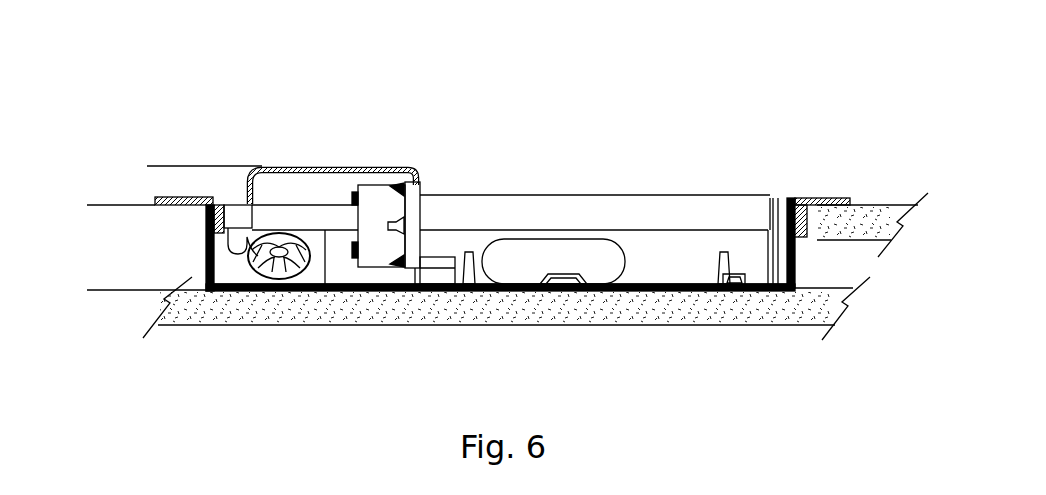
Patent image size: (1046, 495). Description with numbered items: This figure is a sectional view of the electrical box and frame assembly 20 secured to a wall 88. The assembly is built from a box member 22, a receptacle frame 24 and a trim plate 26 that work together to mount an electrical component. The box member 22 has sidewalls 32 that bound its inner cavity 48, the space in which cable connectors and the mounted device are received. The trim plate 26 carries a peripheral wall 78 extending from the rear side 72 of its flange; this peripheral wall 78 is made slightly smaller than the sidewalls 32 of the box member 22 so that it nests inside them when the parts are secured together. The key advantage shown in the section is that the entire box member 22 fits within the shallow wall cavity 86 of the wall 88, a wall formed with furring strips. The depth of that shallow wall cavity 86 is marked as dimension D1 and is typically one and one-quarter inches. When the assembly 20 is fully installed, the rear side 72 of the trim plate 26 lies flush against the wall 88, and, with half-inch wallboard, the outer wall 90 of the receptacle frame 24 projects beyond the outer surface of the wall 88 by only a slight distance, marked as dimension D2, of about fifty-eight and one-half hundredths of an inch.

The electrical box and frame assembly 20 is at (112, 96).
The box member 22 is at (413, 192).
The receptacle frame 24 is at (310, 167).
The trim plate 26 is at (827, 198).
The sidewalls 32 is at (698, 268).
The inner cavity 48 is at (653, 273).
The rear side 72 is at (808, 210).
The peripheral wall 78 is at (773, 208).
The shallow wall cavity 86 is at (837, 290).
The wall 88 is at (877, 207).
The outer wall 90 is at (375, 168).
The dimension D1 is at (123, 337).
The dimension D2 is at (183, 257).